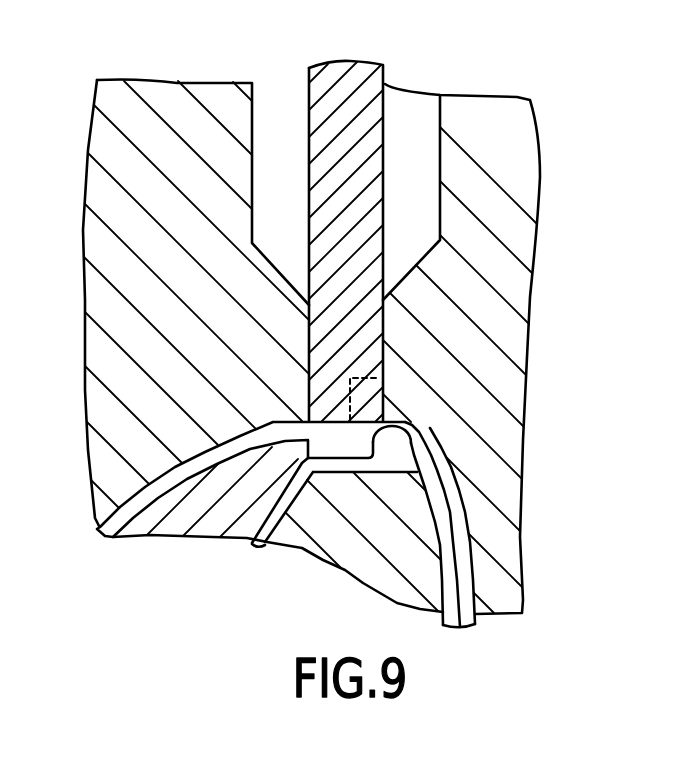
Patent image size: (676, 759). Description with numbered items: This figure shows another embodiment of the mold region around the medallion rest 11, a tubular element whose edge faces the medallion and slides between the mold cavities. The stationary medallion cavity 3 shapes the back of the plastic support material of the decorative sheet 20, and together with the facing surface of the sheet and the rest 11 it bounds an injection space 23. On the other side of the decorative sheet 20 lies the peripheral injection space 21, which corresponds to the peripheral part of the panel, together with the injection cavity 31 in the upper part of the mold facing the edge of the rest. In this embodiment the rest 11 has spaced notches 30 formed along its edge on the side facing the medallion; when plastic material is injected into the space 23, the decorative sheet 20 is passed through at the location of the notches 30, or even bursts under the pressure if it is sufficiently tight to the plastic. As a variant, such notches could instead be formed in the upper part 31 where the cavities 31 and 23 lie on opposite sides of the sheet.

The stationary medallion cavity 3 is at (363, 573).
The medallion rest 11 is at (317, 358).
The decorative sheet 20 is at (450, 483).
The injection space 21 is at (173, 472).
The injection space 23 is at (402, 453).
The notches 30 is at (380, 387).
The injection cavity / upper part 31 is at (393, 540).